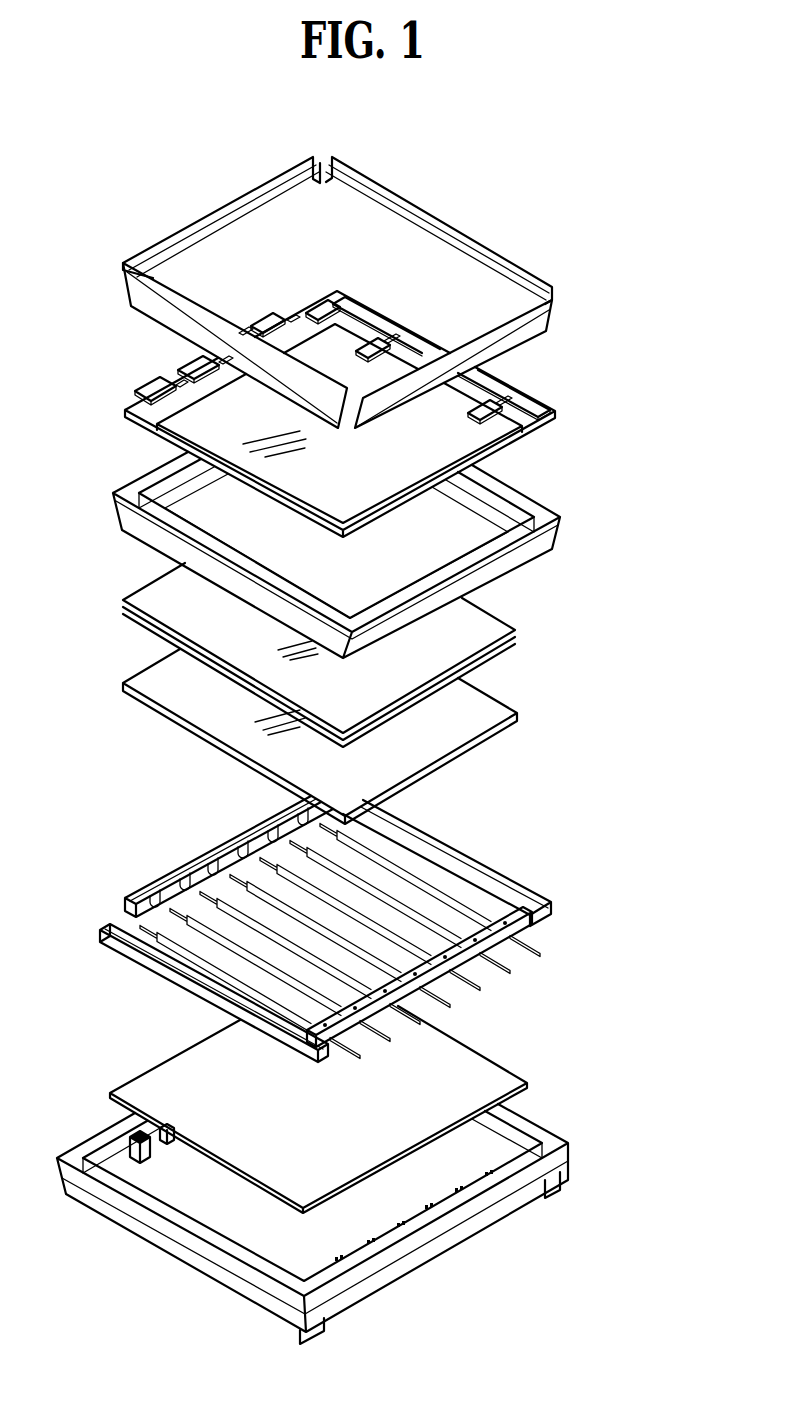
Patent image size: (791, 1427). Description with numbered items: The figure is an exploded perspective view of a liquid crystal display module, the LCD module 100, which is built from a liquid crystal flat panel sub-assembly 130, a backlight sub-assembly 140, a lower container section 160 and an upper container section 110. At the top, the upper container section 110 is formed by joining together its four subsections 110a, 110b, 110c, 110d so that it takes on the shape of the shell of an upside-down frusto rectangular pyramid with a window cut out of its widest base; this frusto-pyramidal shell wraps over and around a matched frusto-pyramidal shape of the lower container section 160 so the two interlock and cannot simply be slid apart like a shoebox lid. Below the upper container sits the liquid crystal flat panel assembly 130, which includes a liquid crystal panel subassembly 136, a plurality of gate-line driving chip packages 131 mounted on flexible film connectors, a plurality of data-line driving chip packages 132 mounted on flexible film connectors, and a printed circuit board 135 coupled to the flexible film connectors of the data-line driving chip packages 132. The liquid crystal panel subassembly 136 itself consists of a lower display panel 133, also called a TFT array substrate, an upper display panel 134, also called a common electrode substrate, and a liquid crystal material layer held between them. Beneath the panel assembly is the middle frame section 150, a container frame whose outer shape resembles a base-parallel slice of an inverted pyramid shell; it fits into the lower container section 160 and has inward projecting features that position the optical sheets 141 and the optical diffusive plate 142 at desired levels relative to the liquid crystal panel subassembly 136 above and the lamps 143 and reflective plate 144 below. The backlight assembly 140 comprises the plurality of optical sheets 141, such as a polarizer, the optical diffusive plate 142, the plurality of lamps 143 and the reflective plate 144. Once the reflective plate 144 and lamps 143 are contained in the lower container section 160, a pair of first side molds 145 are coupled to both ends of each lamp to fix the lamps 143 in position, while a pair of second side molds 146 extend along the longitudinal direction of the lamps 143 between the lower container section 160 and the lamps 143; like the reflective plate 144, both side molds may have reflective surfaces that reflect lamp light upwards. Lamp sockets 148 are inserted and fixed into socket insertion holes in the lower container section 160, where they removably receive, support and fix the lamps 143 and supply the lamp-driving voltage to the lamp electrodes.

The LCD module 100 is at (484, 153).
The upper container section 110 is at (551, 253).
The subsection of upper container section 110a is at (237, 213).
The subsection of upper container section 110b is at (162, 283).
The subsection of upper container section 110c is at (560, 304).
The subsection of upper container section 110d is at (440, 226).
The liquid crystal flat panel assembly 130 is at (548, 371).
The gate-line driving chip packages 131 is at (153, 388).
The data-line driving chip packages 132 is at (310, 310).
The lower display panel 133 is at (503, 432).
The upper display panel 134 is at (497, 457).
The printed circuit board 135 is at (535, 392).
The liquid crystal panel subassembly 136 is at (617, 426).
The backlight assembly 140 is at (628, 1135).
The optical sheets 141 is at (524, 621).
The optical diffusive plate 142 is at (497, 703).
The lamps 143 is at (492, 952).
The reflective plate 144 is at (510, 1086).
The first side molds 145 is at (160, 882).
The second side molds 146 is at (485, 856).
The lamp sockets 148 is at (133, 1139).
The middle frame section 150 is at (553, 521).
The lower container section 160 is at (547, 1151).